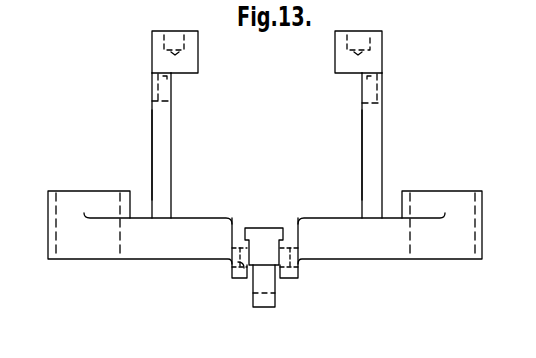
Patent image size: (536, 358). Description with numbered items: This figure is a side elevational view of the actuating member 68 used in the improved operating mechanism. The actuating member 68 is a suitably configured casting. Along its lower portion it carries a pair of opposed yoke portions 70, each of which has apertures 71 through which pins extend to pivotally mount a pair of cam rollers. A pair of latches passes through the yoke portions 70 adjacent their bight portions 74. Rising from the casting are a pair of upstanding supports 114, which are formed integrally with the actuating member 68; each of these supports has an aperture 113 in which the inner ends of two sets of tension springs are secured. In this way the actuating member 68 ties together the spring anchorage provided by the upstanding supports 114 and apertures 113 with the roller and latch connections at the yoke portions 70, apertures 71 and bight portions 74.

The actuating member 68 is at (418, 158).
The yoke portions 70 is at (300, 277).
The apertures 71 is at (228, 264).
The bight portions 74 is at (263, 238).
The apertures 113 is at (166, 86).
The upstanding supports 114 is at (171, 149).